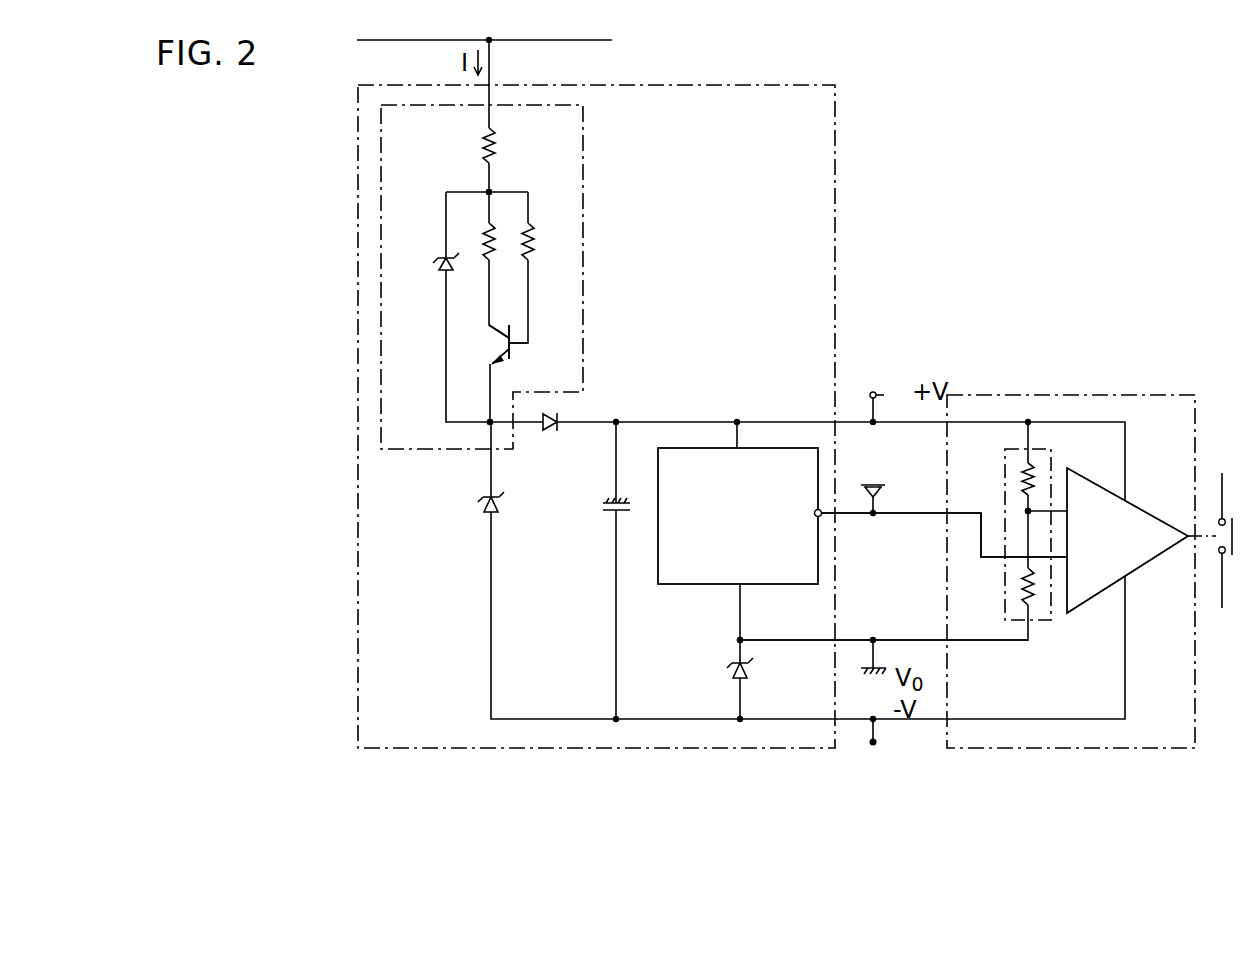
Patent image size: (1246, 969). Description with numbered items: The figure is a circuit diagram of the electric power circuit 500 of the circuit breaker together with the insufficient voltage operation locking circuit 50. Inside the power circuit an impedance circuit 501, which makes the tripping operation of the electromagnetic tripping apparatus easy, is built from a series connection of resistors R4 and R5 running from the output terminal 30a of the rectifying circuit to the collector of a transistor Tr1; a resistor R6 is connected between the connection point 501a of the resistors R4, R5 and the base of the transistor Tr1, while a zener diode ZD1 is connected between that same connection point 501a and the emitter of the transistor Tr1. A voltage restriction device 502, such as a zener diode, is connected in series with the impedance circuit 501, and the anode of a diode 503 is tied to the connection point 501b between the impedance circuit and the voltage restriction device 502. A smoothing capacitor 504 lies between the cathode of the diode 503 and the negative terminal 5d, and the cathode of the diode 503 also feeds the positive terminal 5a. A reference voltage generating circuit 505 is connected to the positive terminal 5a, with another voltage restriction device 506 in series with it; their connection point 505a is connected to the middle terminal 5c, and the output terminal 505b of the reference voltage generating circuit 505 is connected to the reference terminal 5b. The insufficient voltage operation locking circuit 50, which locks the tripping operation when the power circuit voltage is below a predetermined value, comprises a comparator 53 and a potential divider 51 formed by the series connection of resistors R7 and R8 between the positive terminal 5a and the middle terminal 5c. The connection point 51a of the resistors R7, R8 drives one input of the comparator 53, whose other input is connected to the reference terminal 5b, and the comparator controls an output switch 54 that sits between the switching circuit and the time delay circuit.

The output terminal 30a is at (490, 39).
The electric power circuit 500 is at (613, 85).
The impedance circuit 501 is at (584, 208).
The connection point 501a is at (489, 192).
The connection point 501b is at (489, 425).
The resistor R4 is at (496, 146).
The zener diode ZD1 is at (438, 254).
The resistor R5 is at (492, 256).
The resistor R6 is at (533, 242).
The transistor Tr1 is at (500, 345).
The diode 503 is at (557, 416).
The voltage restriction device 502 is at (479, 503).
The smoothing capacitor 504 is at (607, 512).
The reference voltage generating circuit 505 is at (783, 447).
The connection point 505a is at (742, 639).
The output terminal 505b is at (821, 511).
The voltage restriction device 506 is at (728, 668).
The positive terminal 5a is at (870, 395).
The reference terminal 5b is at (876, 486).
The middle terminal 5c is at (875, 640).
The negative terminal 5d is at (876, 742).
The insufficient voltage operation locking circuit 50 is at (1048, 394).
The potential divider 51 is at (1003, 470).
The connection point 51a is at (1024, 511).
The resistor R7 is at (1034, 474).
The resistor R8 is at (1022, 594).
The comparator 53 is at (1152, 566).
The output switch 54 is at (1222, 572).